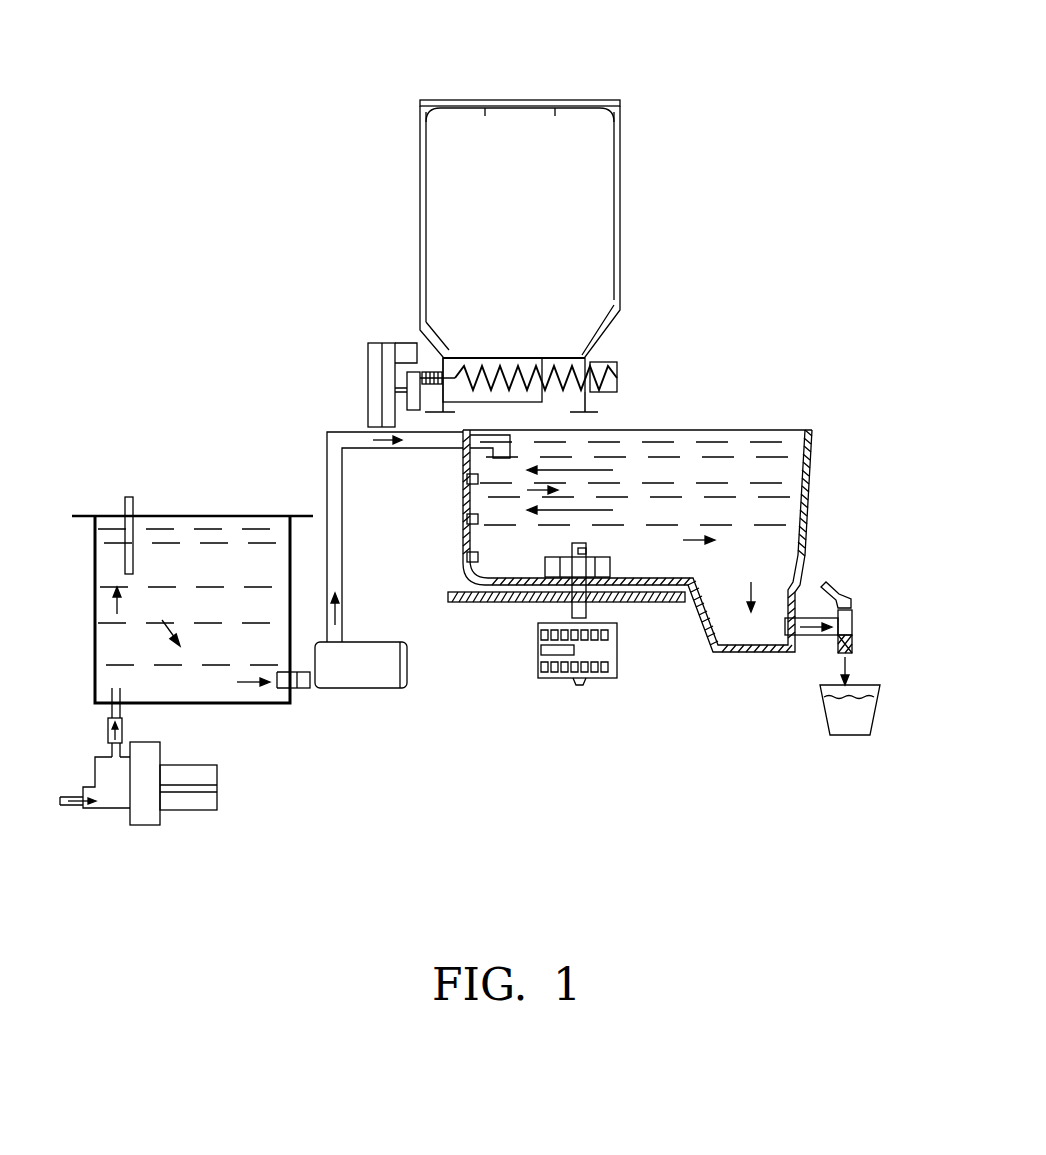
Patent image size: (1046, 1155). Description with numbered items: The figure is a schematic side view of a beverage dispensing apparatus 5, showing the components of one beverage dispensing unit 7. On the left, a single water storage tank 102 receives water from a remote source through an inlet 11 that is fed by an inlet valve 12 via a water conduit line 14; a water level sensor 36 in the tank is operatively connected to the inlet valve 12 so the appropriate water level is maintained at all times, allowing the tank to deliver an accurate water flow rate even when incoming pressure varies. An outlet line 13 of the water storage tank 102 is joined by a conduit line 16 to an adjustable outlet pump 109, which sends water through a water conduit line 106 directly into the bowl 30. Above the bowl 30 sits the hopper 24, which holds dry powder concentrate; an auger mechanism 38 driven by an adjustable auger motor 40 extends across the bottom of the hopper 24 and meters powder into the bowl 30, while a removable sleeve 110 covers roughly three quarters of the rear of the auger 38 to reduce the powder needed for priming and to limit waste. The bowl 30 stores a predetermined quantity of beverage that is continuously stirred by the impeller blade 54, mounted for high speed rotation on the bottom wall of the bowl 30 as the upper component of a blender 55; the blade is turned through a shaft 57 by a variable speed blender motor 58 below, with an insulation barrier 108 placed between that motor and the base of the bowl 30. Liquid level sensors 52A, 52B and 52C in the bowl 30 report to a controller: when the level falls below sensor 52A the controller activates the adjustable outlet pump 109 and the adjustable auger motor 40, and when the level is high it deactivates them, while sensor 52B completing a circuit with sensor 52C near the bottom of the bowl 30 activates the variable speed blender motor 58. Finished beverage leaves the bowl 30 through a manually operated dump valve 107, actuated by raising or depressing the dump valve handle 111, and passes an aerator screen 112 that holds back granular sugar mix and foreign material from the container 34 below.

The beverage dispensing apparatus 5 is at (523, 72).
The beverage dispensing unit 7 is at (694, 401).
The inlet 11 is at (112, 690).
The inlet valve 12 is at (185, 811).
The outlet line 13 is at (285, 705).
The water conduit line 14 is at (107, 733).
The conduit line 16 is at (305, 683).
The hopper 24 is at (622, 207).
The bowl 30 is at (812, 478).
The container 34 is at (852, 736).
The water level sensor 36 is at (133, 495).
The auger mechanism 38 is at (620, 383).
The adjustable auger motor 40 is at (368, 390).
The liquid level sensor 52A is at (462, 476).
The blender motor liquid level sensor 52B is at (462, 518).
The liquid level sensor 52C is at (462, 556).
The impeller blade 54 is at (610, 573).
The blender 55 is at (650, 719).
The impeller shaft 57 is at (570, 600).
The variable speed blender motor 58 is at (582, 690).
The water storage tank 102 is at (255, 704).
The water conduit line 106 is at (343, 611).
The dump valve 107 is at (815, 634).
The insulation barrier 108 is at (655, 607).
The adjustable outlet pump 109 is at (408, 670).
The removable sleeve 110 is at (465, 358).
The dump valve handle 111 is at (840, 590).
The aerator screen 112 is at (853, 642).